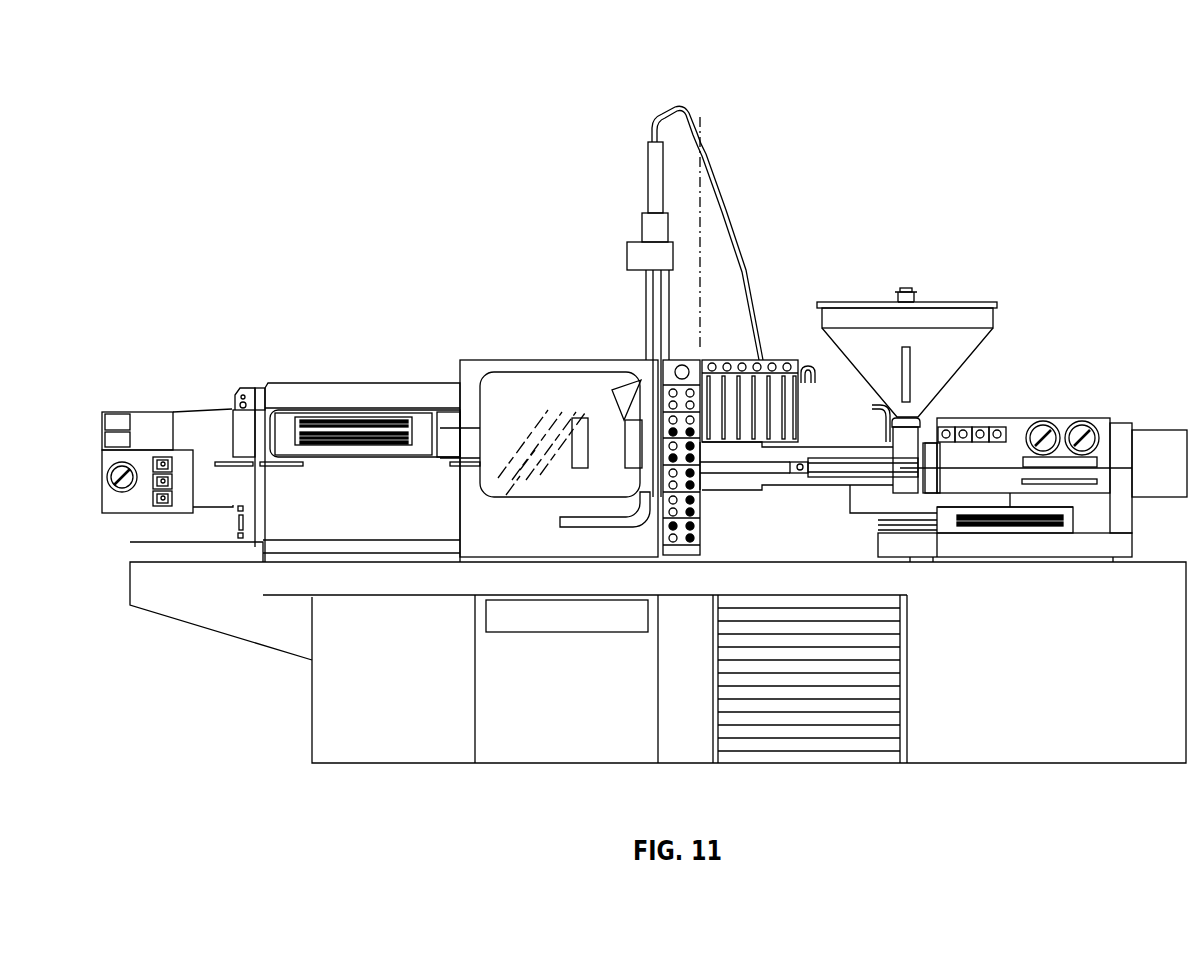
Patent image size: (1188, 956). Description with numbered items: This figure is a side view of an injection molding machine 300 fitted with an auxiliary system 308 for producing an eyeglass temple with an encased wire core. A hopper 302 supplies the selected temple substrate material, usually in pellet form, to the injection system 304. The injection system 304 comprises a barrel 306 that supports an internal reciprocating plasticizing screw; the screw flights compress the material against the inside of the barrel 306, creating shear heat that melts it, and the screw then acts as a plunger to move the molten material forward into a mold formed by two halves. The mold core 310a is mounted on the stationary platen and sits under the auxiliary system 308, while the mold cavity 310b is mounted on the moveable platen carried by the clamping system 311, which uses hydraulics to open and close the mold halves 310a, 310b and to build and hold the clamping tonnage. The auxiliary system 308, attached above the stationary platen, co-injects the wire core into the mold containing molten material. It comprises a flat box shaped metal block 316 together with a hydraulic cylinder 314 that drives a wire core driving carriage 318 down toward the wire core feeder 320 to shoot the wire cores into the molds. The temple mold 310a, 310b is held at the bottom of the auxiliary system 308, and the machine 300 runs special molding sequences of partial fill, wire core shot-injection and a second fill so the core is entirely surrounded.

The injection molding machine 300 is at (246, 134).
The hopper 302 is at (993, 318).
The injection system 304 is at (1187, 122).
The barrel 306 is at (843, 453).
The auxiliary system 308 is at (700, 104).
The mold core 310a is at (627, 428).
The mold cavity 310b is at (580, 417).
The clamping system 311 is at (507, 427).
The hydraulic cylinder 314 is at (648, 177).
The flat box shaped metal block 316 is at (642, 228).
The wire core driving carriage 318 is at (627, 256).
The wire core feeder 320 is at (627, 378).